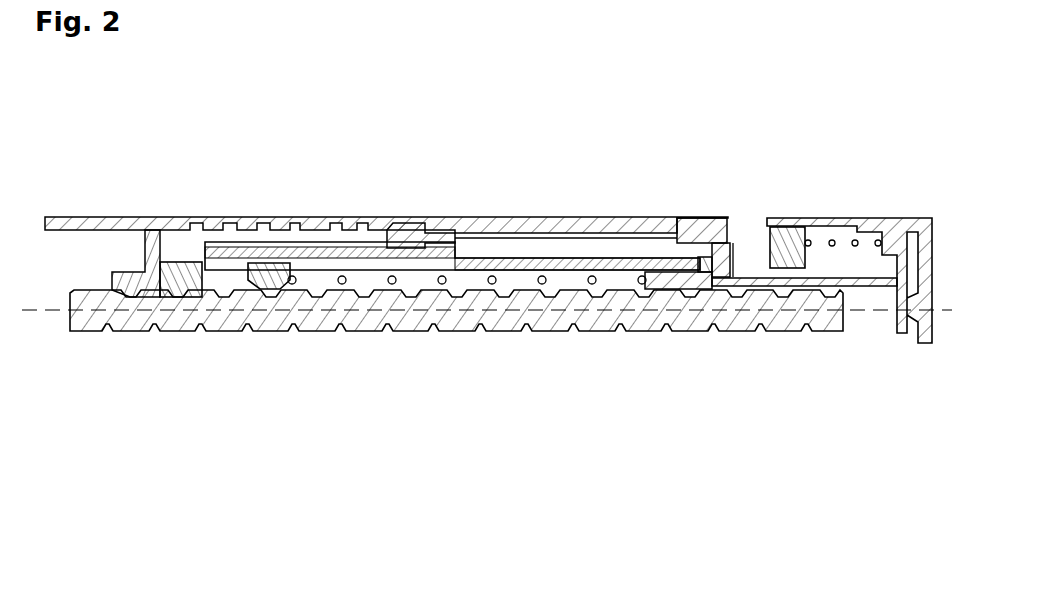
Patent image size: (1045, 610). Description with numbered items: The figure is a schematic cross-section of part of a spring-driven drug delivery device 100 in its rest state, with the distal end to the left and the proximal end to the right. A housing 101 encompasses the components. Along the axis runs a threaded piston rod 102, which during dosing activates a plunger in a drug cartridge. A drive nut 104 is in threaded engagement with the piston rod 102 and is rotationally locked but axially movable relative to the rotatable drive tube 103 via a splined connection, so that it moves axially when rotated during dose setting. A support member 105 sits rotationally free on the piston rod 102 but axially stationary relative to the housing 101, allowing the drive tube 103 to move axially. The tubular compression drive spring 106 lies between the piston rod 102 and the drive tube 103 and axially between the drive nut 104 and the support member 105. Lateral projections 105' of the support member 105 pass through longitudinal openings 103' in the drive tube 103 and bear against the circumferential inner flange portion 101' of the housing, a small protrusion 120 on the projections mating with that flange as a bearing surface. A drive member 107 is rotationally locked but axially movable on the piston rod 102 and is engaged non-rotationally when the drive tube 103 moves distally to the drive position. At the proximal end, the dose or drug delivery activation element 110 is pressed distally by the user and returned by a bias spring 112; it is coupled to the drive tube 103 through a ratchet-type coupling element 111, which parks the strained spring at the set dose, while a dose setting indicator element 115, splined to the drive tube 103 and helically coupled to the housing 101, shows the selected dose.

The drug delivery device 100 is at (120, 175).
The housing 101 is at (386, 188).
The circumferential inner flange portion 101' is at (710, 162).
The threaded piston rod 102 is at (522, 318).
The rotatable drive tube 103 is at (452, 174).
The longitudinal openings 103' is at (760, 178).
The drive nut 104 is at (267, 280).
The support member 105 is at (671, 369).
The lateral projections 105' is at (669, 175).
The compression drive spring 106 is at (442, 285).
The drive member 107 is at (177, 287).
The dose or drug delivery activation element 110 is at (925, 338).
The coupling element 111 is at (785, 253).
The bias spring 112 is at (832, 243).
The dose setting indicator element 115 is at (446, 243).
The small protrusion 120 is at (713, 282).